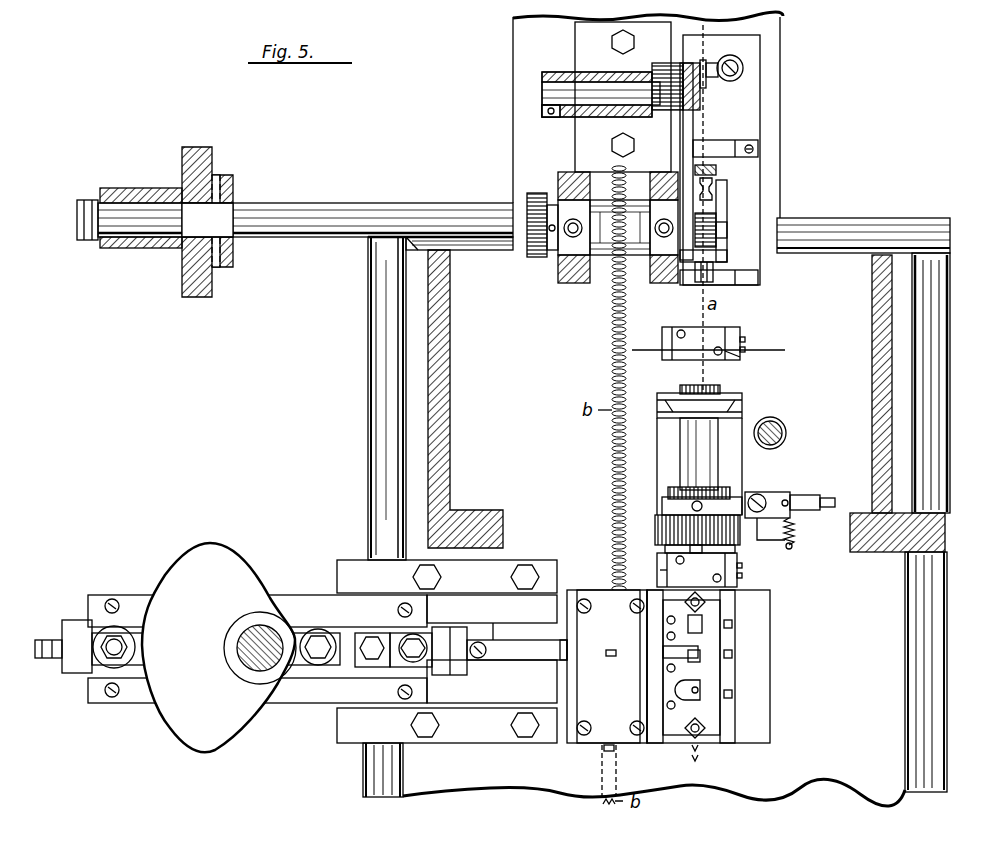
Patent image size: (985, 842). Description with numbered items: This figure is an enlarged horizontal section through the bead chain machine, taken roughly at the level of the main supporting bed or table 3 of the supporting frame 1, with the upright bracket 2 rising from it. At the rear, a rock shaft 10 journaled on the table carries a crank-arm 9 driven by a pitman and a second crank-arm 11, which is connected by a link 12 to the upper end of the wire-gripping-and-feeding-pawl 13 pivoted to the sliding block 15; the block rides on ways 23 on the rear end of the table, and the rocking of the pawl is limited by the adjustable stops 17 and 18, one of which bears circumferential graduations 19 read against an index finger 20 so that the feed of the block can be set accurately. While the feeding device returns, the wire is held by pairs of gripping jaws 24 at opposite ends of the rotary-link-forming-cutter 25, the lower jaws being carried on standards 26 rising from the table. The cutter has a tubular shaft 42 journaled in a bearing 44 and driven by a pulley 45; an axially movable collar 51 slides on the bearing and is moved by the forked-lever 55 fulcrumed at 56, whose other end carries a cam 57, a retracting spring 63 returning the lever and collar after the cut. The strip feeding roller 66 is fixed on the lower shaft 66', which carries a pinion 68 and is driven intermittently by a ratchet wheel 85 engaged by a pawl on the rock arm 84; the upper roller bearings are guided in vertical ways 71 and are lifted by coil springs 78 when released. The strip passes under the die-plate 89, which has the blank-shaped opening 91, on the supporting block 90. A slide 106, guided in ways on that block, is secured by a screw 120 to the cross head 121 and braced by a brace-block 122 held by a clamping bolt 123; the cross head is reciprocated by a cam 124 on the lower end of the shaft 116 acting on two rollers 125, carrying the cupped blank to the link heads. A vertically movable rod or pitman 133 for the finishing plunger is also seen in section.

The supporting frame 1 is at (430, 482).
The upright bracket 2 is at (449, 385).
The main supporting bed or table 3 is at (885, 716).
The crank-arm 9 is at (556, 72).
The rock shaft 10 is at (593, 92).
The crank-arm 11 is at (672, 72).
The link 12 is at (693, 122).
The wire-gripping-and-feeding-pawl 13 is at (716, 235).
The sliding block 15 is at (760, 203).
The adjustable limiting stop or screw 17 is at (703, 284).
The adjustable limiting stop or screw 18 is at (712, 187).
The circumferential graduations 19 is at (716, 170).
The index finger 20 is at (727, 195).
The ways 23 is at (752, 140).
The gripping jaws 24 is at (717, 336).
The rotary-link-forming-cutter 25 is at (732, 547).
The standards 26 is at (738, 358).
The tubular shaft 42 is at (693, 390).
The bearing 44 is at (690, 462).
The pulley 45 is at (742, 405).
The axially movable collar 51 is at (660, 528).
The forked-lever 55 is at (786, 495).
The fulcrum 56 is at (757, 494).
The cam 57 is at (835, 502).
The retracting spring 63 is at (792, 528).
The feeding roller 66 is at (615, 253).
The lower shaft 66' is at (295, 207).
The pinion 68 is at (537, 258).
The vertical ways 71 is at (578, 180).
The coil springs 78 is at (568, 222).
The rock arm 84 is at (142, 249).
The ratchet wheel 85 is at (190, 297).
The die-plate 89 is at (622, 688).
The supporting block 90 is at (765, 666).
The opening 91 is at (614, 648).
The slide 106 is at (540, 650).
The shaft 116 is at (248, 662).
The screw 120 is at (490, 655).
The cross head 121 is at (70, 626).
The brace-block 122 is at (443, 632).
The clamping bolt 123 is at (418, 655).
The cam 124 is at (235, 578).
The rollers 125 is at (135, 650).
The rod or pitman 133 is at (786, 433).